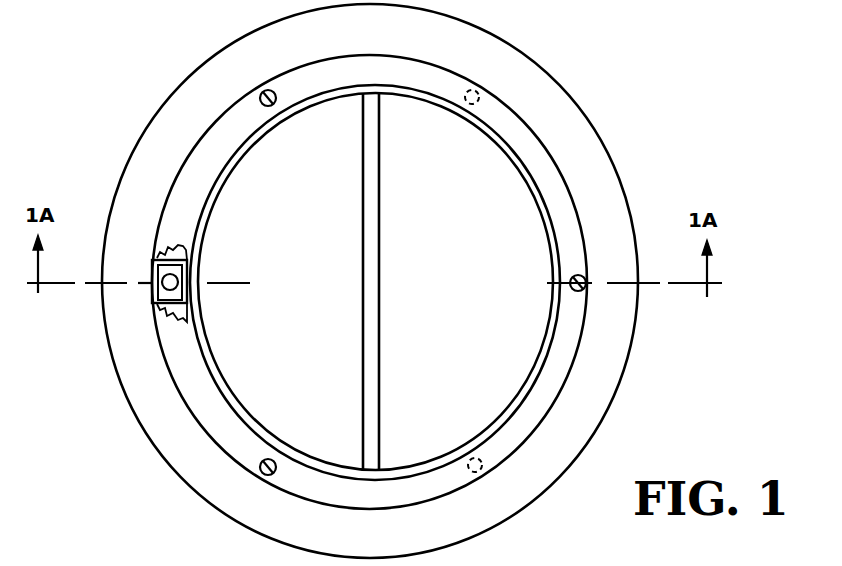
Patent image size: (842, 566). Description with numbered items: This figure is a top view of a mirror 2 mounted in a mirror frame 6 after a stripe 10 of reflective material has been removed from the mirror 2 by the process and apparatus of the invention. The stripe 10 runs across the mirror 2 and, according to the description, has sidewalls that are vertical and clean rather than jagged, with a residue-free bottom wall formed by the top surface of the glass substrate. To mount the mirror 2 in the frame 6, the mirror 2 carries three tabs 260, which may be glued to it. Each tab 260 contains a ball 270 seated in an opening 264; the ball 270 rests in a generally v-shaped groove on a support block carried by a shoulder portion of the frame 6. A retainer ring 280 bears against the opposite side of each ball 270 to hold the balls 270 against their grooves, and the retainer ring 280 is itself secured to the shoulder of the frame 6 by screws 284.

The mirror 2 is at (490, 298).
The mirror frame 6 is at (612, 402).
The stripe 10 is at (375, 256).
The tab 260 is at (183, 293).
The opening 264 is at (178, 274).
The ball 270 is at (152, 297).
The retainer ring 280 is at (205, 415).
The screws 284 is at (270, 106).